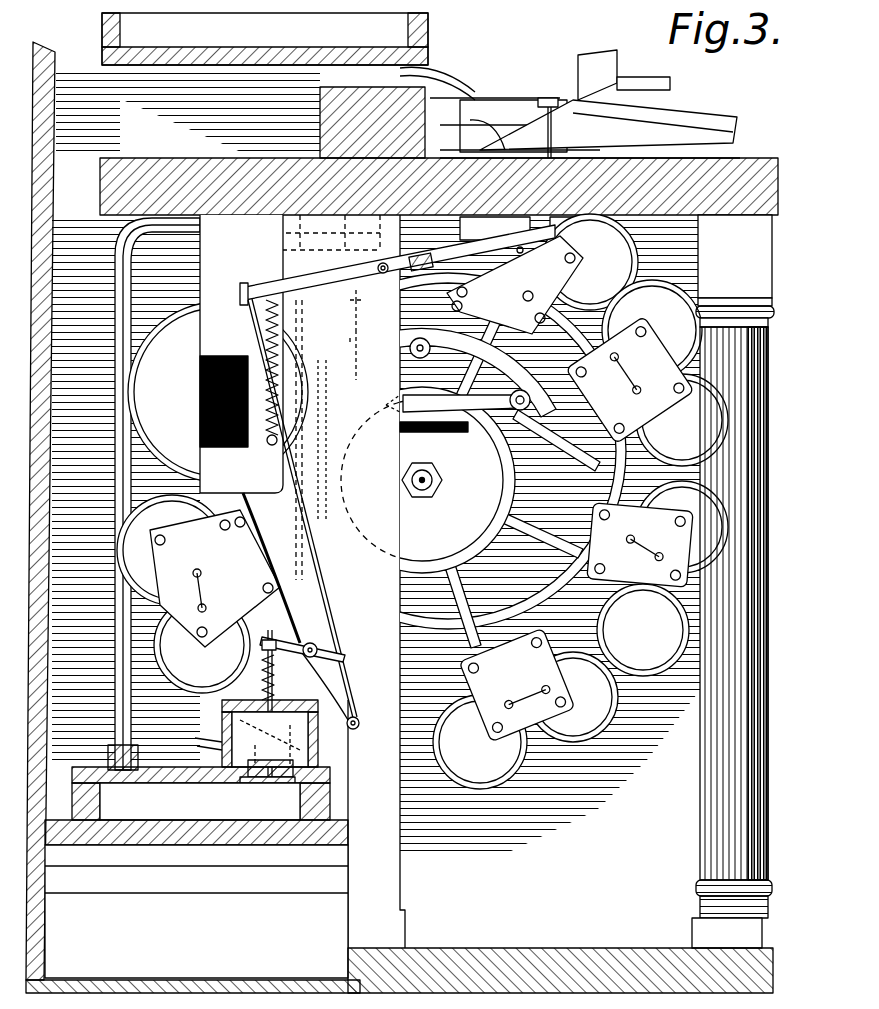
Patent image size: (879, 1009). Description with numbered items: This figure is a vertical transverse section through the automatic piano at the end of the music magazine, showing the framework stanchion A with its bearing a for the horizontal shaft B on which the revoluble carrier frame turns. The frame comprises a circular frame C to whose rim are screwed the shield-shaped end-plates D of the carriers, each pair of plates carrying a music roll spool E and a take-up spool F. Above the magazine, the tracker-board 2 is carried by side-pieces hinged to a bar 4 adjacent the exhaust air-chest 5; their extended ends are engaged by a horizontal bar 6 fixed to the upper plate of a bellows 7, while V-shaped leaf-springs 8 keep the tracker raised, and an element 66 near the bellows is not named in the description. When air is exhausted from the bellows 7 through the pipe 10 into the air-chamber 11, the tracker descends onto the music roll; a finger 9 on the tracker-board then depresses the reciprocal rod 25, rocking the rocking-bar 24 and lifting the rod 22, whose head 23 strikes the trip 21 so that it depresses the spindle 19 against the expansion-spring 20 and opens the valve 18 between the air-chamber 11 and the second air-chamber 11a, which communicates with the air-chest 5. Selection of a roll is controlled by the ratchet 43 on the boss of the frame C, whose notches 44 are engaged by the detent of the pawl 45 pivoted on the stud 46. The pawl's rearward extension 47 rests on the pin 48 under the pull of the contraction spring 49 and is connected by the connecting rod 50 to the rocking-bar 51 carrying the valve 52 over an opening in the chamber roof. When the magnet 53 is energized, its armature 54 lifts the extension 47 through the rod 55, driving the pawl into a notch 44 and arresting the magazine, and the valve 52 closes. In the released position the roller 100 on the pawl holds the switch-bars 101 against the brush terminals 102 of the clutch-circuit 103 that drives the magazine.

The tracker-board 2 is at (487, 134).
The bar 4 is at (360, 87).
The exhaust air-chest 5 is at (265, 39).
The horizontal bar 6 is at (598, 58).
The bellows 7 is at (690, 110).
The leaf-springs 8 is at (500, 100).
The finger 9 is at (550, 98).
The pipe 10 is at (118, 318).
The air-chamber 11 is at (201, 793).
The air-chamber 11a is at (204, 799).
The valve 18 is at (348, 804).
The spindle 19 is at (250, 792).
The expansion-spring 20 is at (282, 692).
The trip 21 is at (332, 650).
The rod 22 is at (322, 595).
The head or nut 23 is at (356, 730).
The rocking-bar 24 is at (250, 290).
The reciprocal rod 25 is at (580, 146).
The ratchet or locking member 43 is at (556, 443).
The notches 44 is at (515, 492).
The pawl 45 is at (477, 390).
The stud 46 is at (490, 311).
The rearward extension 47 is at (313, 434).
The pin 48 is at (339, 440).
The contraction spring 49 is at (392, 463).
The connecting rod 50 is at (287, 372).
The rocking-bar 51 is at (212, 710).
The valve 52 is at (186, 745).
The magnet 53 is at (292, 239).
The armature 54 is at (371, 305).
The rod 55 is at (371, 341).
The bar 66 is at (672, 80).
The roller 100 is at (537, 402).
The switch-bars 101 is at (461, 375).
The brush terminals 102 is at (434, 438).
The clutch-circuit 103 is at (379, 420).
The stanchion A is at (215, 511).
The horizontal shaft B is at (426, 480).
The circular frame C is at (448, 451).
The end-plates D is at (422, 489).
The music roll spool E is at (425, 501).
The take-up spool F is at (651, 581).
The bearings a is at (422, 480).